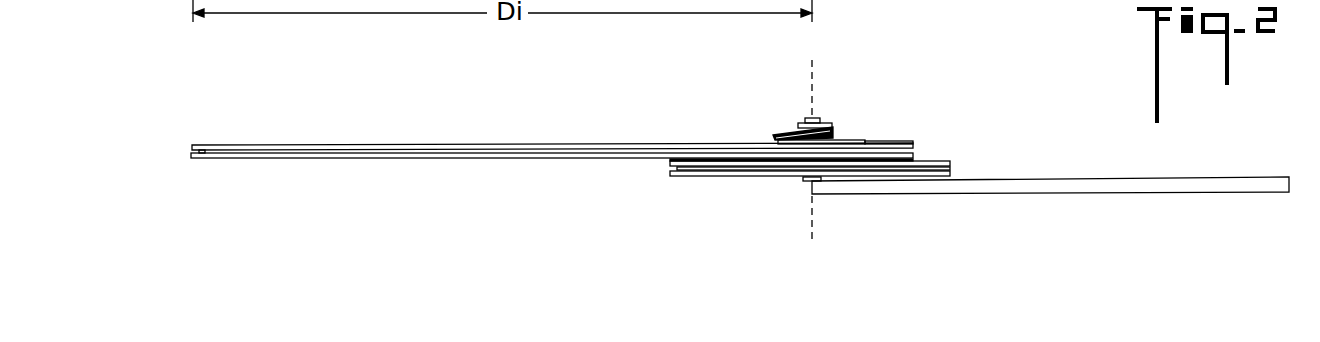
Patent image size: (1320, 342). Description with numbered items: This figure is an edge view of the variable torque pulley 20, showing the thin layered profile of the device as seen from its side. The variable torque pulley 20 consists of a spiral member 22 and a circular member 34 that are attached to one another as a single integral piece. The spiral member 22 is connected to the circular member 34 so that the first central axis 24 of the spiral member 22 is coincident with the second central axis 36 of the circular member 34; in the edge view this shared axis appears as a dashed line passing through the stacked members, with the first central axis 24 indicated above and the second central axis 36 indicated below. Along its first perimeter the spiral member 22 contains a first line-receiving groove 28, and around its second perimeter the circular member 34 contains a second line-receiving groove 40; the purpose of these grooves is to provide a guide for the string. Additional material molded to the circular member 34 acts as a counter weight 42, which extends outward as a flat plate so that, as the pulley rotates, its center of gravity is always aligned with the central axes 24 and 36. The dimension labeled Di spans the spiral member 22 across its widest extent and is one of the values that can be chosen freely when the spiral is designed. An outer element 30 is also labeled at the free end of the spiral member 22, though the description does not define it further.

The variable torque pulley 20 is at (679, 109).
The spiral member 22 is at (512, 145).
The first central axis 24 is at (812, 104).
The first line-receiving groove 28 is at (443, 152).
The end element 30 is at (194, 145).
The circular member 34 is at (948, 162).
The second central axis 36 is at (813, 240).
The second line-receiving groove 40 is at (691, 168).
The counter weight 42 is at (1080, 185).